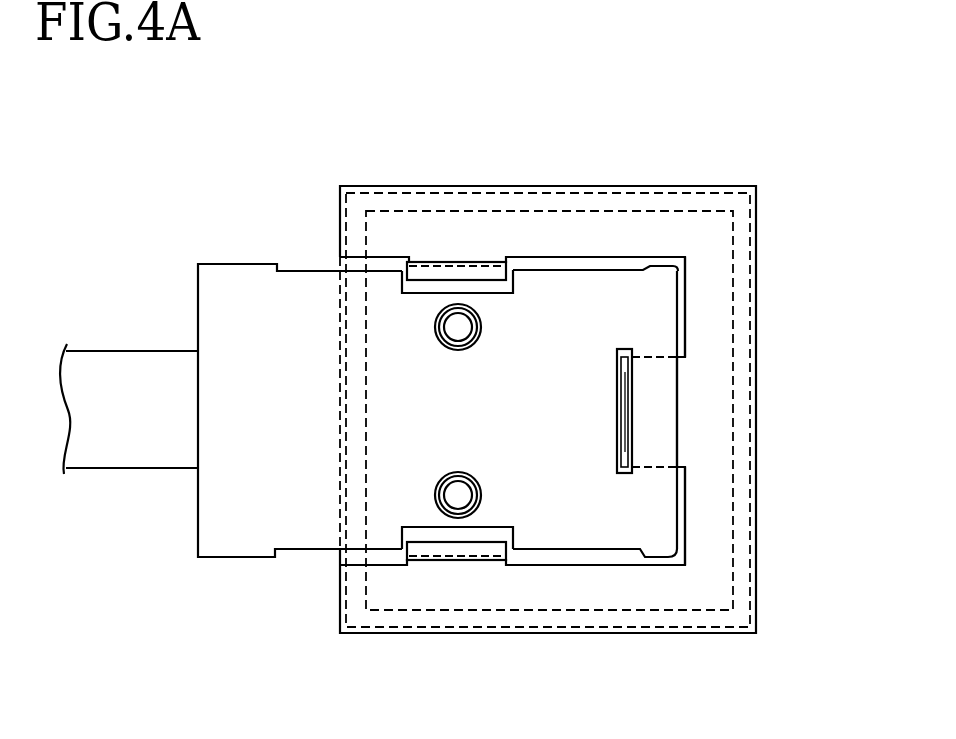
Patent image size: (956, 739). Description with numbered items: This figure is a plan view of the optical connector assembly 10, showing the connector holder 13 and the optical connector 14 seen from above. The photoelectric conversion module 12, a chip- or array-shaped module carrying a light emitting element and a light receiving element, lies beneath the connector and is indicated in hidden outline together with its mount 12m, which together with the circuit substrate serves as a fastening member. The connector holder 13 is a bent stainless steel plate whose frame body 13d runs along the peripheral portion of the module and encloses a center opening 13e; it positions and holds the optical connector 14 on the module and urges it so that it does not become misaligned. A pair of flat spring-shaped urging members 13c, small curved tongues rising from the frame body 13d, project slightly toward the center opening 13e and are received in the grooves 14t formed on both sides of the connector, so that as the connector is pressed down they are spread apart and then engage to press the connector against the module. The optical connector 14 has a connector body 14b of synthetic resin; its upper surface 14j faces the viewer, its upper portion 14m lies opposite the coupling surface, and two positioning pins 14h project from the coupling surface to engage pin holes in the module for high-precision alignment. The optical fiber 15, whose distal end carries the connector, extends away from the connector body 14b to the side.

The optical connector assembly 10 is at (606, 345).
The photoelectric conversion module 12 is at (741, 556).
The mount 12m is at (697, 211).
The connector holder 13 is at (541, 408).
The urging member 13c is at (443, 262).
The frame body 13d is at (757, 255).
The center opening 13e is at (575, 258).
The optical connector 14 is at (493, 417).
The connector body 14b is at (305, 550).
The groove 14t is at (476, 281).
The positioning pin 14h is at (465, 325).
The upper portion 14m is at (497, 427).
The upper surface 14j is at (560, 408).
The optical fiber 15 is at (113, 351).